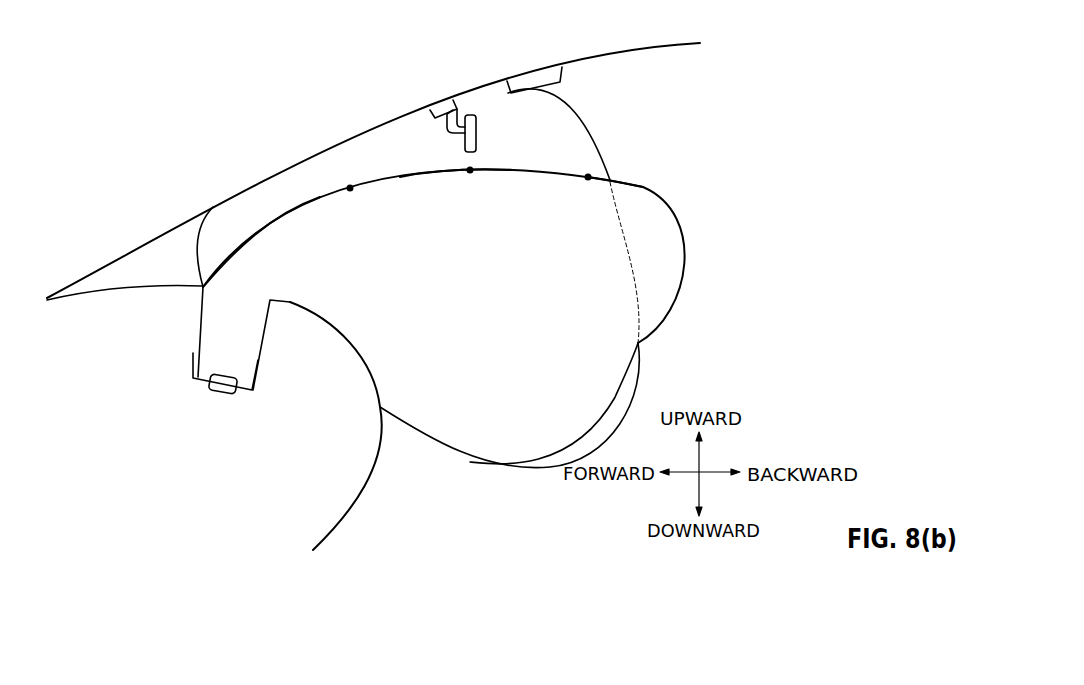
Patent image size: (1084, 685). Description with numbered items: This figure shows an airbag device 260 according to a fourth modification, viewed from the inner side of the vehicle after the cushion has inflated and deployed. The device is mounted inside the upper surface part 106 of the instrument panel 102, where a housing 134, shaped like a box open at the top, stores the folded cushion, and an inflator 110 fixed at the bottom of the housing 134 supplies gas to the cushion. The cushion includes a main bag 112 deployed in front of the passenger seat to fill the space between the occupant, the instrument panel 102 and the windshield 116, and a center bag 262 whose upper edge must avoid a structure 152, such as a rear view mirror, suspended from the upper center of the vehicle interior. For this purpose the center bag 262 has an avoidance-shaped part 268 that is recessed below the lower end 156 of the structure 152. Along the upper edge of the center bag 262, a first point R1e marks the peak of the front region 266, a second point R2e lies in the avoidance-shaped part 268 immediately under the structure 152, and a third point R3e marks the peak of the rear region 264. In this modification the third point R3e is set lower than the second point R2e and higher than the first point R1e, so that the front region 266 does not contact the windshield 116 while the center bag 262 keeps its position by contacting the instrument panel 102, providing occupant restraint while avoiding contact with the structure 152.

The airbag device 260 is at (184, 143).
The windshield 116 is at (113, 260).
The front region 266 is at (300, 220).
The first point R1e is at (350, 186).
The second point R2e is at (469, 170).
The third point R3e is at (589, 177).
The structure 152 is at (468, 113).
The main bag 112 is at (573, 110).
The lower end 156 is at (477, 148).
The avoidance-shaped part 268 is at (525, 170).
The rear region 264 is at (643, 187).
The center bag 262 is at (677, 210).
The upper surface part 106 is at (283, 299).
The housing 134 is at (260, 380).
The inflator 110 is at (222, 393).
The instrument panel 102 is at (353, 500).